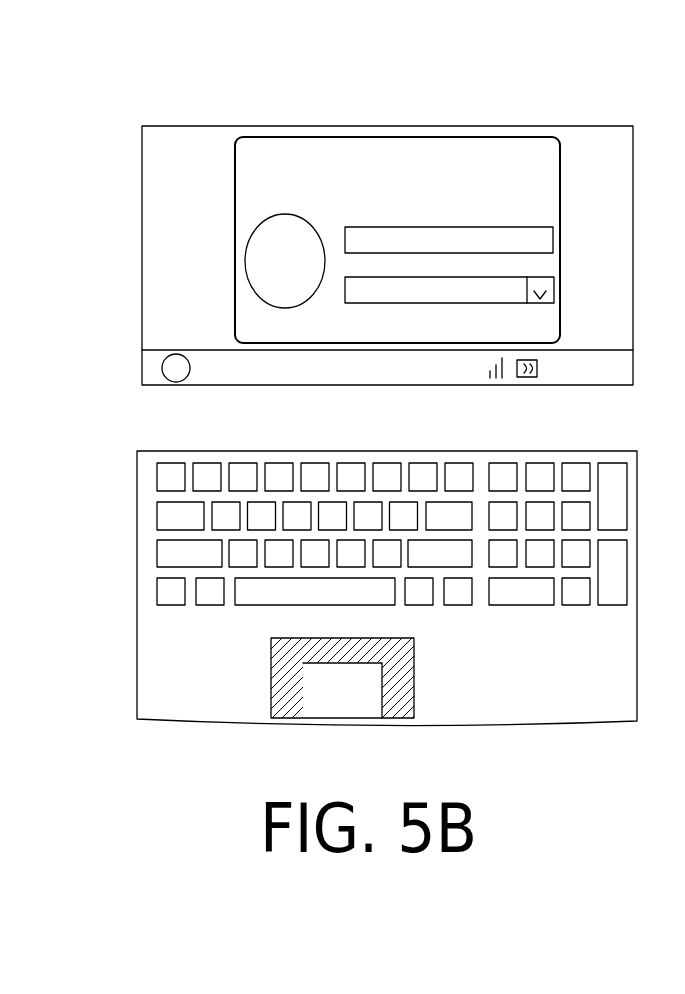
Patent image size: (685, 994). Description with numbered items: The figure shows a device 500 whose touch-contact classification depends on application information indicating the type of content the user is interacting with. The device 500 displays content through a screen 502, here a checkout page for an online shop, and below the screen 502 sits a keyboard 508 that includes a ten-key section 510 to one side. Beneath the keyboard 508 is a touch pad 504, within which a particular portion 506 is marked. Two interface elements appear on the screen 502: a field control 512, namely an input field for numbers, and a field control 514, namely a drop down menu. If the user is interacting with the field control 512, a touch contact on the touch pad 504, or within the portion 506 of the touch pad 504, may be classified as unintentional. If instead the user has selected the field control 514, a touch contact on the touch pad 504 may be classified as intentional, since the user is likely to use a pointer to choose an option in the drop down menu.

The device 500 is at (172, 68).
The screen 502 is at (370, 126).
The touch pad 504 is at (392, 638).
The portion 506 is at (414, 682).
The keyboard 508 is at (468, 449).
The ten-key section 510 is at (629, 612).
The field control 512 is at (467, 227).
The field control 514 is at (393, 304).